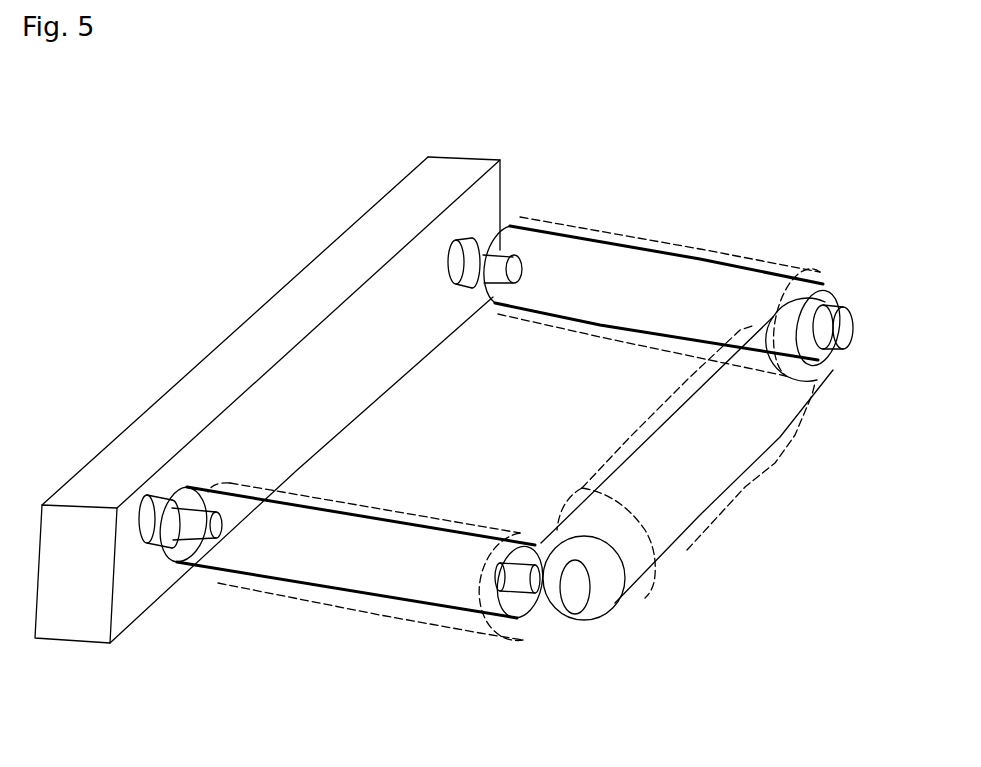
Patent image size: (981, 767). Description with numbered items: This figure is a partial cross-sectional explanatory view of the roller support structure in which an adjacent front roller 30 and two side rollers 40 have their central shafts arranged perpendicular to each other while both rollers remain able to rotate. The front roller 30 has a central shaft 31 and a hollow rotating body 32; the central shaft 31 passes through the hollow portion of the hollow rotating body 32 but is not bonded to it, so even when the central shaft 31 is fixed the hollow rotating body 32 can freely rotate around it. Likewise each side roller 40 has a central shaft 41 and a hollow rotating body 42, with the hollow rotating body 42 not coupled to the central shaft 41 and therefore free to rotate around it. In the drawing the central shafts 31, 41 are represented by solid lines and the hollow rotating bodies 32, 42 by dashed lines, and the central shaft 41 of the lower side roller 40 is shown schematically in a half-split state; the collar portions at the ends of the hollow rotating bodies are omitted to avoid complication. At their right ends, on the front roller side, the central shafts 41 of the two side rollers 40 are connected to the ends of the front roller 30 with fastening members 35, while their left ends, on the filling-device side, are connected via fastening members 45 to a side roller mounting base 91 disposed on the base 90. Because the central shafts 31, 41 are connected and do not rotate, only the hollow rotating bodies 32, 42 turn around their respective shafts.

The front roller 30 is at (708, 466).
The central shaft 31 is at (672, 530).
The hollow rotating body 32 is at (787, 450).
The fastening member 35 is at (853, 320).
The side roller 40 is at (464, 431).
The central shaft 41 is at (597, 250).
The hollow rotating body 42 is at (707, 250).
The fastening member 45 is at (505, 222).
The base 90 is at (344, 176).
The side roller mounting base 91 is at (468, 150).